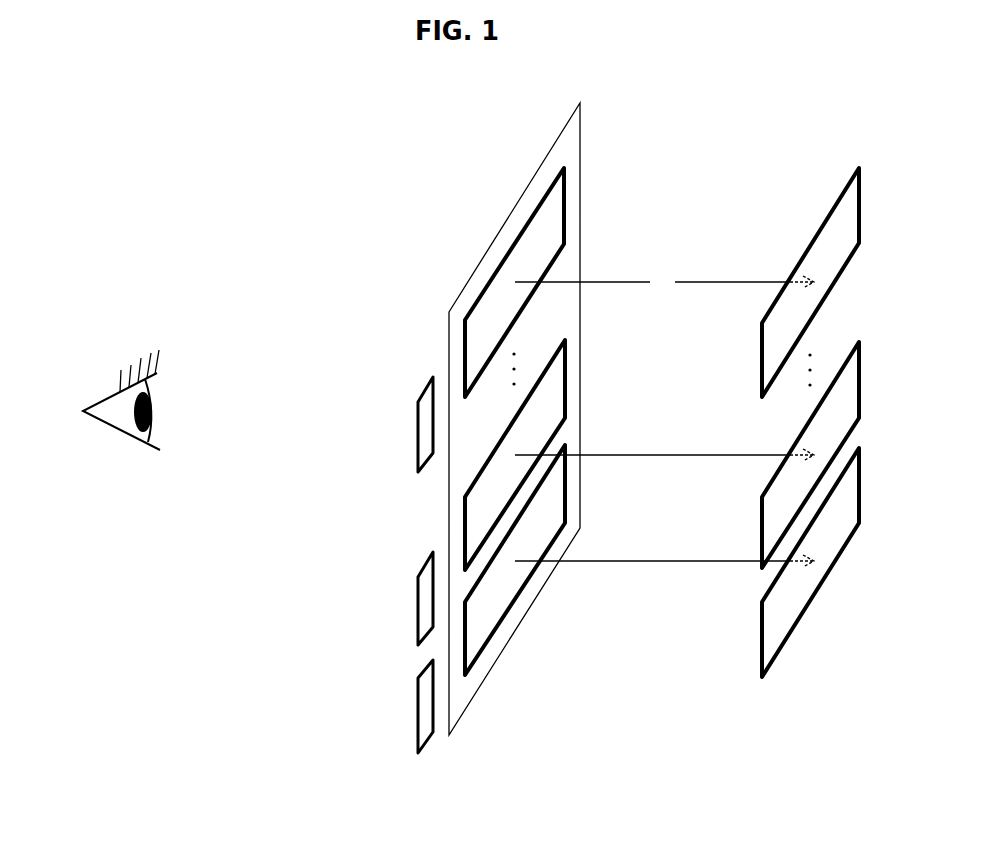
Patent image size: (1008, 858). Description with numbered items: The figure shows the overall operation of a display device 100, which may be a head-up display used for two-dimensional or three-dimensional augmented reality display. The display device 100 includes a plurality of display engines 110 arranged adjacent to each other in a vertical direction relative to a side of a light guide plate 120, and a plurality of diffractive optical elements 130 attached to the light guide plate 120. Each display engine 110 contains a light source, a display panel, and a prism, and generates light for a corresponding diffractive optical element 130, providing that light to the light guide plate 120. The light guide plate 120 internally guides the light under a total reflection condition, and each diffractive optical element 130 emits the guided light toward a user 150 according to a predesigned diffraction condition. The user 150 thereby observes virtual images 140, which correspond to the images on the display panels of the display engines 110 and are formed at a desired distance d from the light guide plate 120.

The display device 100 is at (358, 233).
The display engines 110 is at (463, 597).
The light guide plate 120 is at (514, 207).
The diffractive optical elements 130 is at (534, 454).
The virtual images 140 is at (830, 442).
The user 150 is at (105, 398).